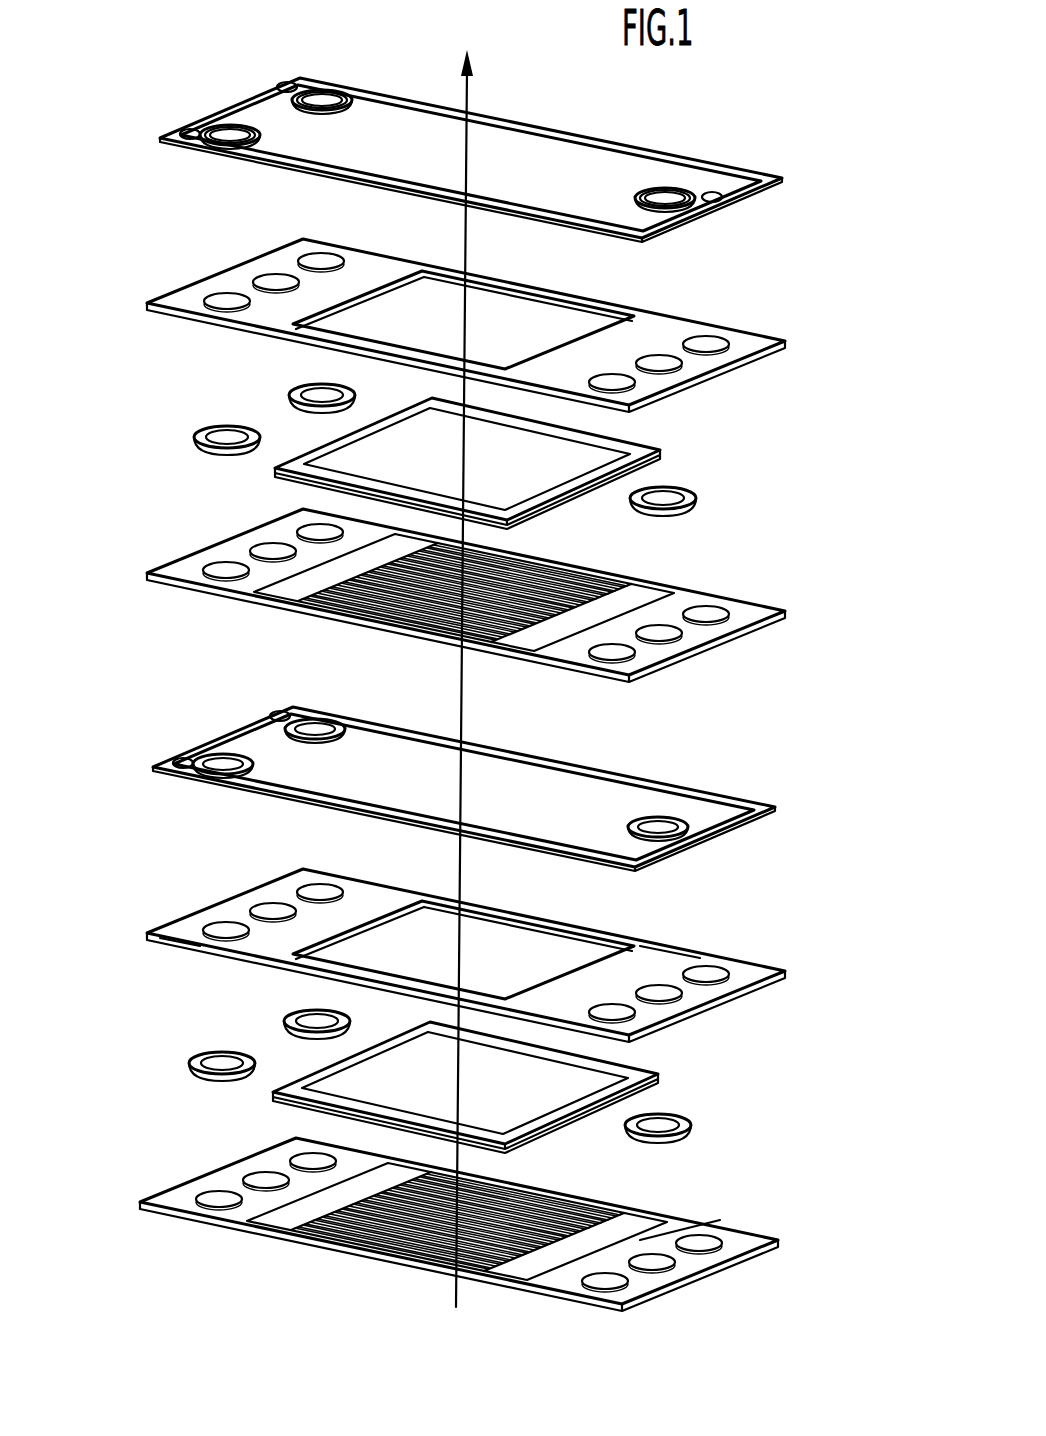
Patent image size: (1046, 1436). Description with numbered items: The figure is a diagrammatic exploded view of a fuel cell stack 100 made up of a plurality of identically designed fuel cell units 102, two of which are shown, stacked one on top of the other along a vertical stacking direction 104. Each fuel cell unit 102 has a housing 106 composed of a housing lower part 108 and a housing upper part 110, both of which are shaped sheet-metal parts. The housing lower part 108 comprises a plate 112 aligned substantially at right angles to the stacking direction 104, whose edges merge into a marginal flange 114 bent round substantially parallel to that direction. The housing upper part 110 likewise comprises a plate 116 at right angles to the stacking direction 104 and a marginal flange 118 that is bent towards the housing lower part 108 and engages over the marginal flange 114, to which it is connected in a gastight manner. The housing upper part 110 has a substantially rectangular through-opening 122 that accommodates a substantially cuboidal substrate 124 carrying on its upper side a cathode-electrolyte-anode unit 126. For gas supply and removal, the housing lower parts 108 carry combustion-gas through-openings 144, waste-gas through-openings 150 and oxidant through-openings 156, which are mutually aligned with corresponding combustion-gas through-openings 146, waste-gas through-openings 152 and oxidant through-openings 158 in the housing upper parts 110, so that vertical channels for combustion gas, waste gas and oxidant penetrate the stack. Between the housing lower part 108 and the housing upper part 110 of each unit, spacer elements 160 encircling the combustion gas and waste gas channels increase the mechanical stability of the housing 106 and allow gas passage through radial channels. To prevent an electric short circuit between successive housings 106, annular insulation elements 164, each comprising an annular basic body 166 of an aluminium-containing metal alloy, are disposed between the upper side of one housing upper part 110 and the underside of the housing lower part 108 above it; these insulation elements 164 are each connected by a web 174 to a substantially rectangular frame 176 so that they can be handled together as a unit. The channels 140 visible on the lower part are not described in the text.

The fuel cell stack 100 is at (821, 153).
The fuel cell unit 102 is at (168, 47).
The stacking direction 104 is at (470, 238).
The housing 106 is at (790, 322).
The housing lower part 108 is at (752, 603).
The housing upper part 110 is at (752, 332).
The plate 112 is at (683, 1228).
The marginal flange 114 is at (616, 1200).
The plate 116 is at (648, 955).
The marginal flange 118 is at (175, 955).
The through-opening 122 is at (372, 923).
The substrate 124 is at (538, 1138).
The cathode-electrolyte-anode unit 126 is at (420, 1092).
The flow channels 140 is at (412, 1238).
The combustion-gas through-openings 144 is at (215, 1199).
The combustion-gas through-openings 146 is at (222, 930).
The waste-gas through-openings 150 is at (655, 1265).
The waste-gas through-openings 152 is at (660, 995).
The oxidant through-openings 156 is at (262, 1180).
The oxidant through-openings 158 is at (272, 911).
The spacer elements 160 is at (215, 428).
The insulation elements 164 is at (240, 127).
The annular basic body 166 is at (262, 140).
The web 174 is at (175, 130).
The frame 176 is at (498, 118).